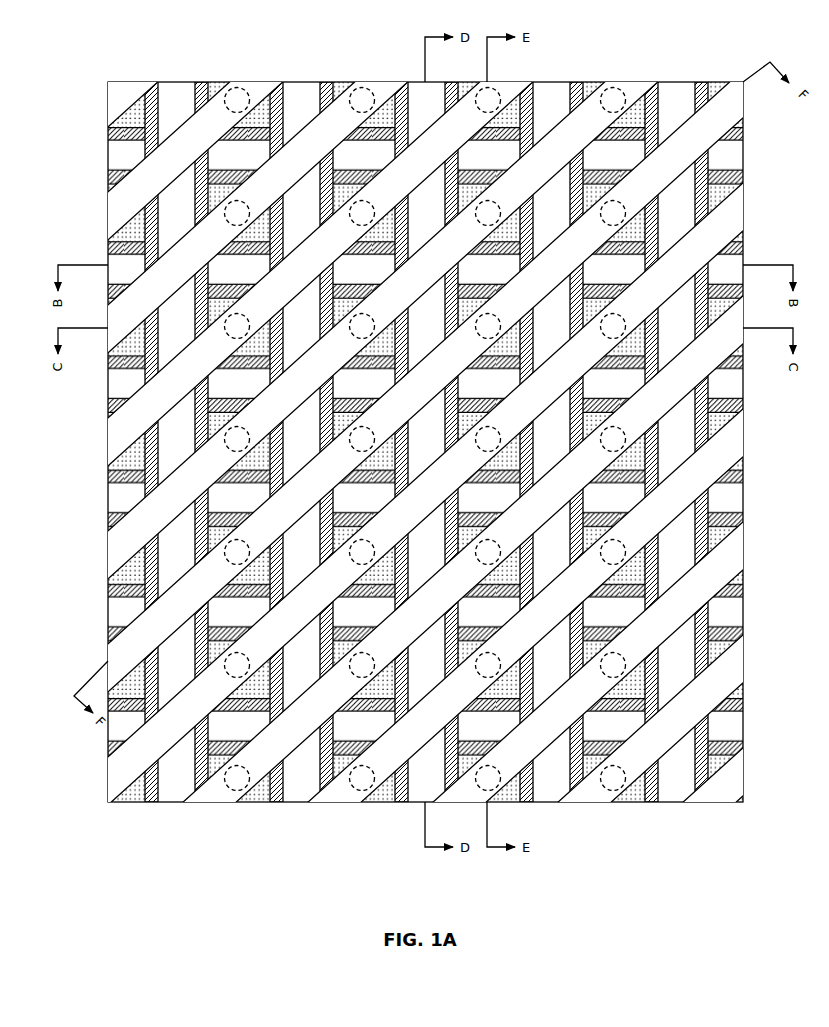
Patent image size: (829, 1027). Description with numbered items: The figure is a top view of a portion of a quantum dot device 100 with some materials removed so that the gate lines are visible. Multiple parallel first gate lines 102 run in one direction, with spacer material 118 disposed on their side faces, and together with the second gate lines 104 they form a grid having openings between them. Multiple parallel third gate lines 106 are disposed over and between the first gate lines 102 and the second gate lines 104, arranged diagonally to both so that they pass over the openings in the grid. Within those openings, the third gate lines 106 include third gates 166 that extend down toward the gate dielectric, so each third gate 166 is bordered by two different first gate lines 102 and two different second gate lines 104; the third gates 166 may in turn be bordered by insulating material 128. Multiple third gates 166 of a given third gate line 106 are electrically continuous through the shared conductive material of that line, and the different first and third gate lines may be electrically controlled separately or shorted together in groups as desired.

The quantum dot device 100 is at (212, 59).
The first gate lines 102 is at (426, 442).
The second gate lines 104 is at (426, 610).
The third gate lines 106 is at (414, 513).
The spacer material 118 is at (426, 442).
The insulating material 128 is at (628, 803).
The third gates 166 is at (425, 439).